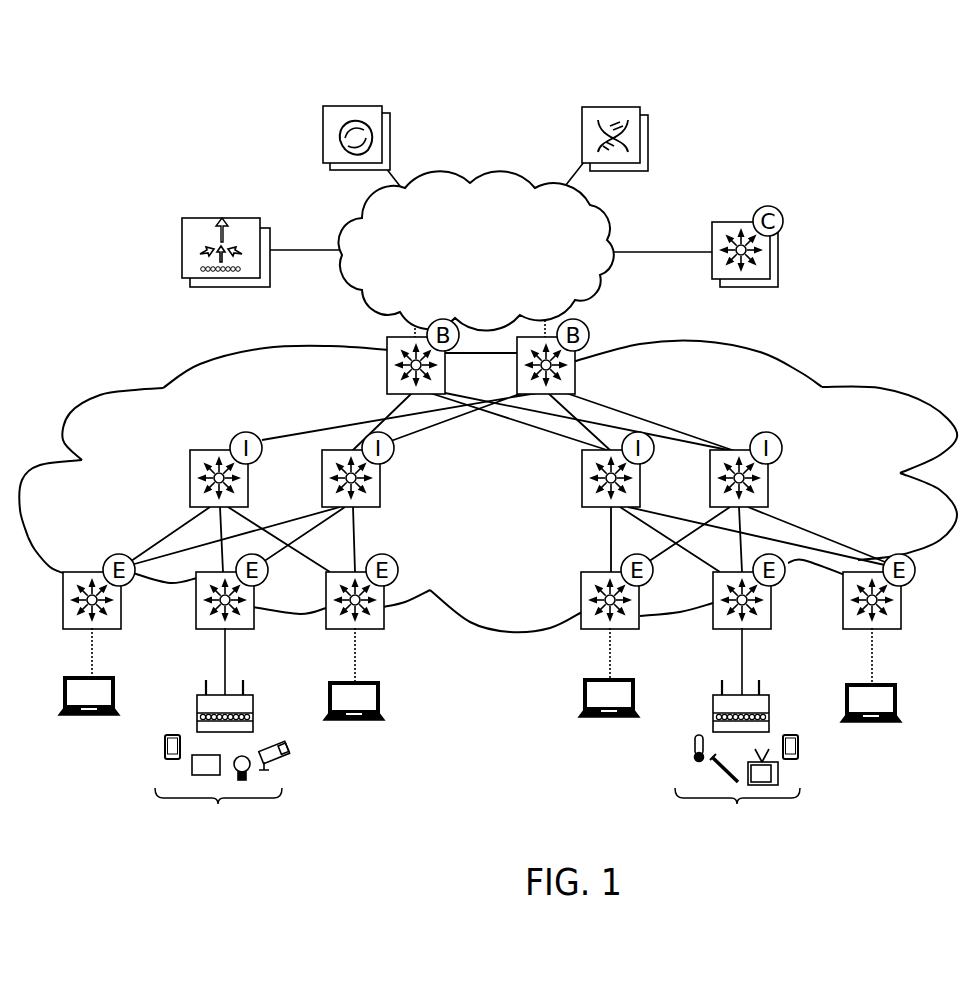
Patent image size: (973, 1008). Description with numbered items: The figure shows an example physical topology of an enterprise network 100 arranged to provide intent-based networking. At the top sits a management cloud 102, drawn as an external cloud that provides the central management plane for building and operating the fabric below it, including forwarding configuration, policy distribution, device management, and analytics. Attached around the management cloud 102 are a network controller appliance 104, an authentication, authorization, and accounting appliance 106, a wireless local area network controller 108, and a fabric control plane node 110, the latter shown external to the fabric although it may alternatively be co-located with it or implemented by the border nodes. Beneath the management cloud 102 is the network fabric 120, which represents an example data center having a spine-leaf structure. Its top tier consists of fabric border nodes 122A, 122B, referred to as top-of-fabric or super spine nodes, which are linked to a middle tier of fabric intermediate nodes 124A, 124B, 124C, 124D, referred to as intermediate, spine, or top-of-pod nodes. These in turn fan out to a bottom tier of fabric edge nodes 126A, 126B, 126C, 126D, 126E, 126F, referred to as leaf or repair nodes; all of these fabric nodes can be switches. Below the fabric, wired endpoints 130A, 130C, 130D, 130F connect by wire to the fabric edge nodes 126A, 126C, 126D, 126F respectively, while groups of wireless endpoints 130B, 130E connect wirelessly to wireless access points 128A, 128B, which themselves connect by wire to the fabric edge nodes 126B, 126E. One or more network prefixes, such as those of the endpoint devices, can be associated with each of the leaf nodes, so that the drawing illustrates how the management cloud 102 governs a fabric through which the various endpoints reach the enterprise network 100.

The enterprise network 100 is at (166, 100).
The management cloud 102 is at (362, 224).
The network controller appliance 104 is at (582, 135).
The AAA appliance 106 is at (323, 132).
The wireless local area network controller 108 is at (182, 250).
The fabric control plane node 110 is at (713, 238).
The network fabric 120 is at (495, 505).
The fabric border node 122A is at (387, 345).
The fabric border node 122B is at (575, 338).
The fabric intermediate node 124A is at (190, 478).
The fabric intermediate node 124B is at (380, 501).
The fabric intermediate node 124C is at (582, 501).
The fabric intermediate node 124D is at (768, 480).
The fabric edge node 126A is at (66, 628).
The fabric edge node 126B is at (205, 628).
The fabric edge node 126C is at (383, 620).
The fabric edge node 126D is at (640, 626).
The fabric edge node 126E is at (772, 626).
The fabric edge node 126F is at (902, 626).
The wireless access point 128A is at (250, 690).
The wireless access point 128B is at (713, 712).
The wired endpoint 130A is at (80, 717).
The wireless endpoints 130B is at (222, 785).
The wired endpoint 130C is at (340, 722).
The wired endpoint 130D is at (595, 718).
The wireless endpoints 130E is at (737, 785).
The wired endpoint 130F is at (875, 722).